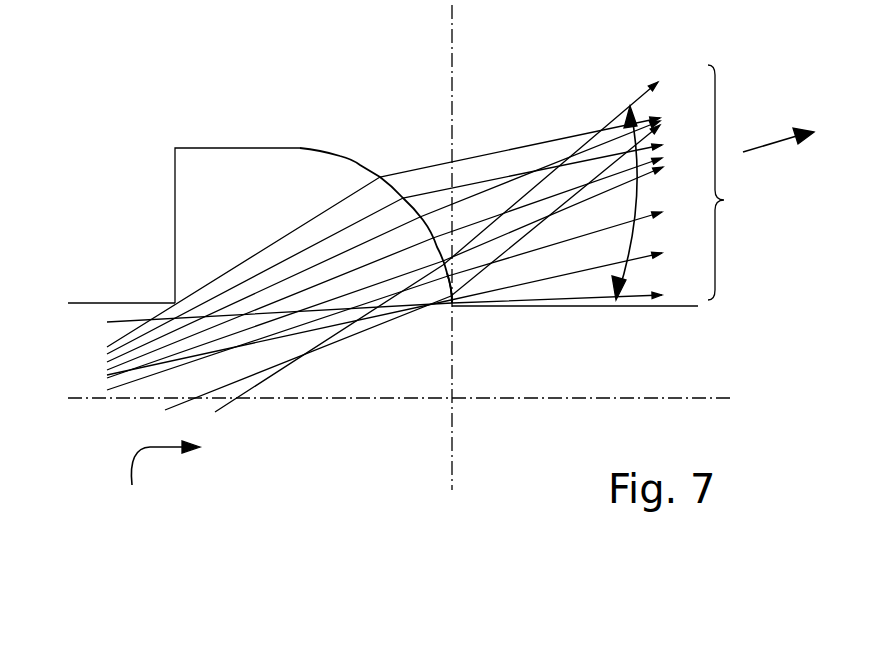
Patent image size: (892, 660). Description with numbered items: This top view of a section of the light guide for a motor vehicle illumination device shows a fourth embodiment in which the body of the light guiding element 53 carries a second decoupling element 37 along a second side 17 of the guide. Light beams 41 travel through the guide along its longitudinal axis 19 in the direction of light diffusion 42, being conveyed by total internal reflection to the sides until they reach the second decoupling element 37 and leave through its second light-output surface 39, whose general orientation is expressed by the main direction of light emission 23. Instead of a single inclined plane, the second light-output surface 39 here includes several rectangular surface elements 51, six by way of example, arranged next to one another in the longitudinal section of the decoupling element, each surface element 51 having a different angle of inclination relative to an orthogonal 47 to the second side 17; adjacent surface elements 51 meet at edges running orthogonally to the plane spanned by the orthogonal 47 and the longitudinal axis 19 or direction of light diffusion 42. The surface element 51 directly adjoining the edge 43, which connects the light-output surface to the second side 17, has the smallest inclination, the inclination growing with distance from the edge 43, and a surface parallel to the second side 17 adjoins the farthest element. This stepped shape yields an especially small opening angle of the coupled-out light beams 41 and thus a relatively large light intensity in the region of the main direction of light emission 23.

The second side 17 is at (93, 303).
The longitudinal axis 19 is at (547, 397).
The main direction of light emission 23 is at (773, 144).
The second decoupling element 37 is at (140, 92).
The second light-output surface 39 is at (403, 92).
The light beams 41 is at (436, 238).
The direction of light diffusion 42 is at (157, 482).
The edge 43 is at (443, 285).
The orthogonal 47 is at (456, 12).
The surface element 51 is at (357, 162).
The body of light guiding element 53 is at (222, 147).